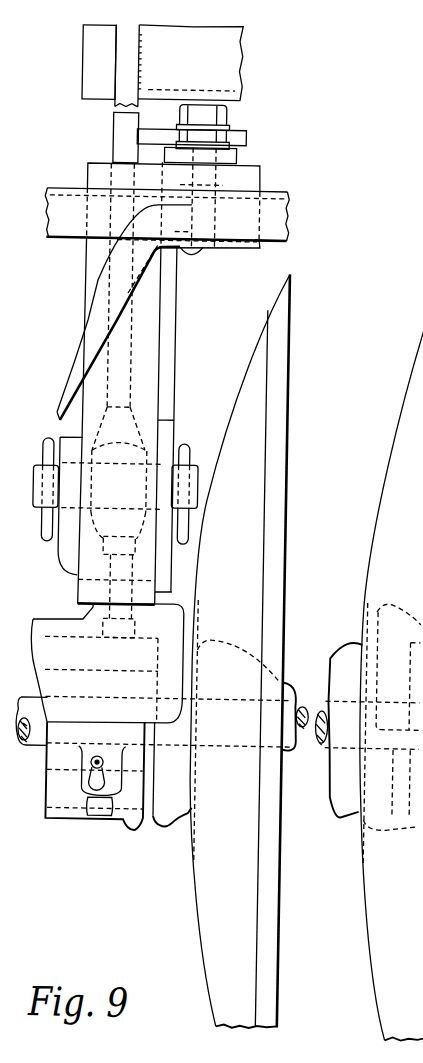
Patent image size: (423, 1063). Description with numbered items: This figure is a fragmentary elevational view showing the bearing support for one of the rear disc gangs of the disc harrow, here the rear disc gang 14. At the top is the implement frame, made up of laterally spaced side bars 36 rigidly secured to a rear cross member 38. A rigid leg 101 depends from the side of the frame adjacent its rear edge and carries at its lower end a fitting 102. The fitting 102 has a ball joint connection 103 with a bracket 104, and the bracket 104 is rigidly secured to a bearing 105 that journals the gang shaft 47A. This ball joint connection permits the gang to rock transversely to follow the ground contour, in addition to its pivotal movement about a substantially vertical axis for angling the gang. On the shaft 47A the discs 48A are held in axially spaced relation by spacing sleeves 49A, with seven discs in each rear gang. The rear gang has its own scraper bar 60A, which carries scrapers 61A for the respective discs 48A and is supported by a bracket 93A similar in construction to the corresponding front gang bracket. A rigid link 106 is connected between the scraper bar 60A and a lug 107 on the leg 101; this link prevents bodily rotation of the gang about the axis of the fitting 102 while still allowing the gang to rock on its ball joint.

The rear cross member 38 is at (220, 63).
The side bar 36 is at (75, 92).
The leg 101 is at (106, 134).
The lug 107 is at (233, 136).
The rigid link 106 is at (234, 155).
The scraper bar 60A is at (273, 219).
The scraper 61A is at (79, 350).
The bracket 93A is at (147, 329).
The disc 48A is at (280, 350).
The ball joint connection 103 is at (161, 448).
The bracket 104 is at (61, 560).
The fitting 102 is at (49, 621).
The shaft 47A is at (37, 748).
The bearing 105 is at (100, 824).
The spacing sleeve 49A is at (349, 818).
The rear disc gang 14 is at (141, 863).